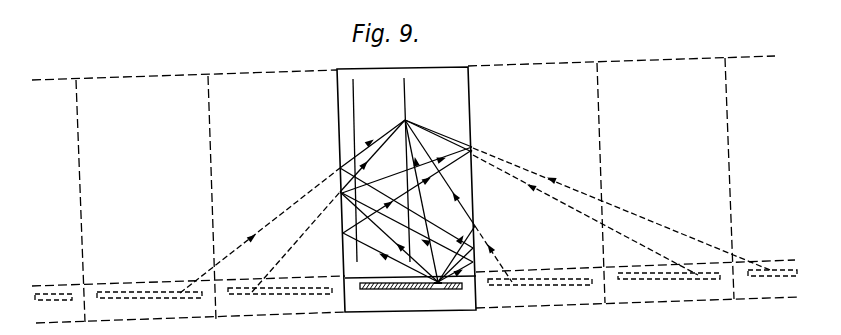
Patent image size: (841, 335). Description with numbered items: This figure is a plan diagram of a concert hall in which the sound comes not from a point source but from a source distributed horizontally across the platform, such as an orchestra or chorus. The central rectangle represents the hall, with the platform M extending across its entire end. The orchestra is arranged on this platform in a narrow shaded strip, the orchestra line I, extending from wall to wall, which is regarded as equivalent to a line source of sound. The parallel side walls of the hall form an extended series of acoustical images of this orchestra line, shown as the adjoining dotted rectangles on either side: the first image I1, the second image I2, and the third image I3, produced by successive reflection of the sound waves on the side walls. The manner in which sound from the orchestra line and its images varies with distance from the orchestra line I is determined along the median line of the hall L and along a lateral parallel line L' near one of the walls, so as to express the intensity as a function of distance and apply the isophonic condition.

The orchestra line I is at (384, 290).
The platform M is at (442, 296).
The median line of the hall L is at (412, 170).
The lateral parallel line L' is at (364, 170).
The first acoustical image I1 is at (273, 292).
The second acoustical image I2 is at (142, 297).
The third acoustical image I3 is at (40, 299).